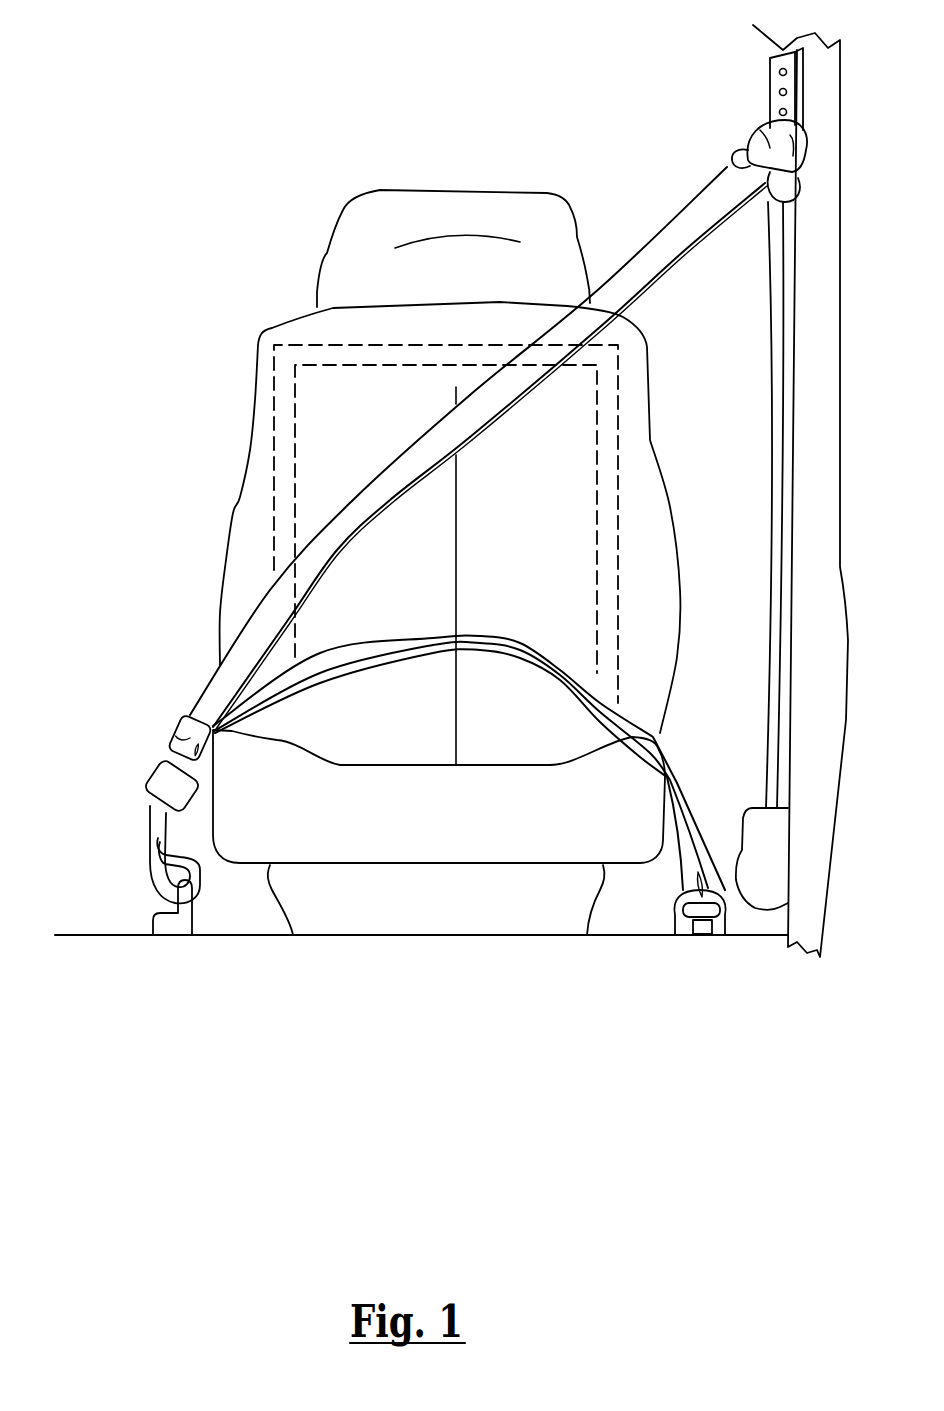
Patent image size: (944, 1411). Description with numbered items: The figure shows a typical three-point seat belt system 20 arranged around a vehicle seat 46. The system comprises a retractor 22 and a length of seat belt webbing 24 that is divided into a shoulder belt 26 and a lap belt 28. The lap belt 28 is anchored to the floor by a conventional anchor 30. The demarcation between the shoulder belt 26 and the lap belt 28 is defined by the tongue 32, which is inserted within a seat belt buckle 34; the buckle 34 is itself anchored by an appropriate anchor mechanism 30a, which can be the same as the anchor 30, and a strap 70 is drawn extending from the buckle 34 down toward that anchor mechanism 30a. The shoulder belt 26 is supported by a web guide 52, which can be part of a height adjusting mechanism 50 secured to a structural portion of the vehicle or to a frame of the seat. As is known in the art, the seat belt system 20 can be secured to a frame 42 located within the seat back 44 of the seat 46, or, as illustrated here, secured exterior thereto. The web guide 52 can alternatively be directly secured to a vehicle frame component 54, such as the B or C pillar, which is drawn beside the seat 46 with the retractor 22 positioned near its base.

The three-point seat belt system 20 is at (140, 216).
The retractor 22 is at (763, 843).
The seat belt webbing 24 is at (432, 447).
The shoulder belt 26 is at (625, 251).
The lap belt 28 is at (483, 647).
The anchor 30 is at (678, 913).
The anchor mechanism 30a is at (178, 936).
The tongue 32 is at (172, 740).
The seat belt buckle 34 is at (150, 785).
The frame 42 is at (262, 447).
The seat back 44 is at (248, 333).
The seat 46 is at (312, 331).
The height adjusting mechanism 50 is at (753, 82).
The web guide 52 is at (760, 130).
The vehicle frame component 54 is at (822, 153).
The strap 70 is at (147, 830).